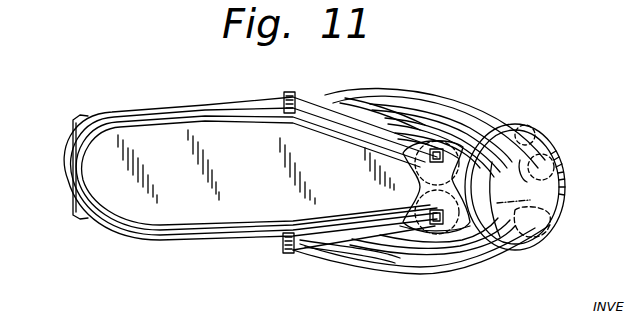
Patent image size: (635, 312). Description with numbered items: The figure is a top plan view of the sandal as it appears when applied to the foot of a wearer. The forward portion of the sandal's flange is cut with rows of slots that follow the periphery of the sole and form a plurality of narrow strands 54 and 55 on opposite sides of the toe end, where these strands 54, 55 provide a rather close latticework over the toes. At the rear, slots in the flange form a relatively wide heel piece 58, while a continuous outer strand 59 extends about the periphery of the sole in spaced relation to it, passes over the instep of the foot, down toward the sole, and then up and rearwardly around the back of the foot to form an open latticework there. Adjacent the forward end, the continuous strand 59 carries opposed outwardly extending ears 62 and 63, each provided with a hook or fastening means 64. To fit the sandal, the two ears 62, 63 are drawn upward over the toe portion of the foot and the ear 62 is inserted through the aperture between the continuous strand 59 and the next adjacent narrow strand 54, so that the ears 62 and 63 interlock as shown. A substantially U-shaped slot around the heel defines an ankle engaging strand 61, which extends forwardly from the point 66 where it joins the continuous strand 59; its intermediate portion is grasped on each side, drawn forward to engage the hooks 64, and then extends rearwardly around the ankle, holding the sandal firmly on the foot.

The narrow strands 54 is at (427, 274).
The narrow strands 55 is at (458, 110).
The heel piece 58 is at (72, 211).
The continuous outer strand 59 is at (214, 108).
The ankle engaging strand 61 is at (360, 128).
The ear 62 is at (467, 233).
The ear 63 is at (500, 133).
The hook 64 is at (440, 152).
The point 66 is at (282, 95).